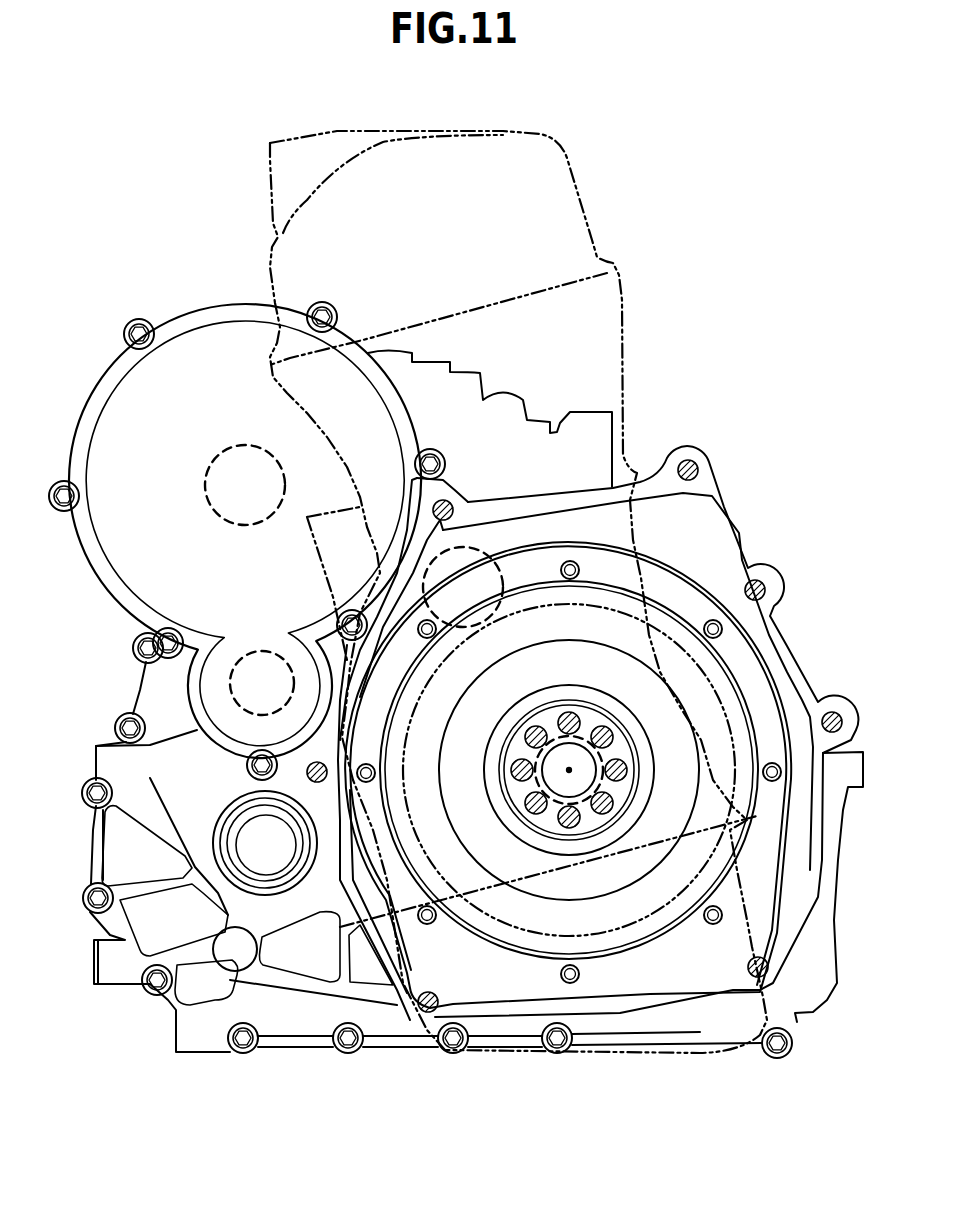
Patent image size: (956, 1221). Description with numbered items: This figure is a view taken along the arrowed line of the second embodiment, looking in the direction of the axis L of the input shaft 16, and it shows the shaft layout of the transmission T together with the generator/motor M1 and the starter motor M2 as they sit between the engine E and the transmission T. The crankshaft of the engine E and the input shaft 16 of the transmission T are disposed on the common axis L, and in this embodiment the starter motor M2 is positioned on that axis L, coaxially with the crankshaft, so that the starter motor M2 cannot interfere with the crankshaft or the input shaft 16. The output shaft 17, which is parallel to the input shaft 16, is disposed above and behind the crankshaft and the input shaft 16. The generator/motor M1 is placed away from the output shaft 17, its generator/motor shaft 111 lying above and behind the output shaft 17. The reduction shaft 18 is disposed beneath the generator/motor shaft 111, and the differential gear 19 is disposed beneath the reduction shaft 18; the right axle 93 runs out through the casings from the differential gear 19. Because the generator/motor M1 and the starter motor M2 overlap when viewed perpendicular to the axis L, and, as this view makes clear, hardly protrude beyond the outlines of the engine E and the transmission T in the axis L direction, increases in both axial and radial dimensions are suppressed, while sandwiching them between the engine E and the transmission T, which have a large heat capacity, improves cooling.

The engine E is at (628, 359).
The generator/motor M1 is at (173, 313).
The starter motor M2 is at (658, 631).
The transmission T is at (116, 671).
The axis L is at (569, 768).
The input shaft 16 is at (582, 745).
The output shaft 17 is at (485, 550).
The reduction shaft 18 is at (268, 652).
The differential gear 19 is at (226, 892).
The right axle 93 is at (275, 862).
The generator/motor shaft 111 is at (252, 442).